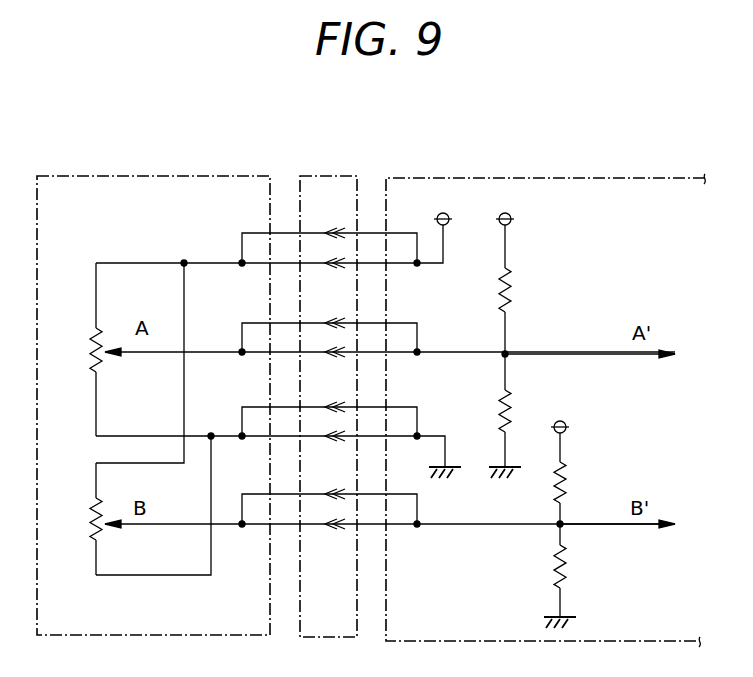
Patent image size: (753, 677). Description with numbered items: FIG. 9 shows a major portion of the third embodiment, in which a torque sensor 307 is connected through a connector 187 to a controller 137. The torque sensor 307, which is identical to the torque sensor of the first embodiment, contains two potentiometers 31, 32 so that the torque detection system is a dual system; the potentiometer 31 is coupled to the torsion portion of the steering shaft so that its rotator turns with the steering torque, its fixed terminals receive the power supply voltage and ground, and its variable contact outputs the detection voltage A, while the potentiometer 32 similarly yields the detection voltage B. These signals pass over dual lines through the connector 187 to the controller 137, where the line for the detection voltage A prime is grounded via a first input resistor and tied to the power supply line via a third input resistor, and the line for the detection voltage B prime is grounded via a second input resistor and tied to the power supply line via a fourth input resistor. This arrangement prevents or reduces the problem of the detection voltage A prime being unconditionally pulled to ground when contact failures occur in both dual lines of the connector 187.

The torque sensor 307 is at (190, 176).
The connector 187 is at (329, 176).
The controller 137 is at (528, 178).
The potentiometer 31 is at (92, 331).
The potentiometer 32 is at (92, 498).